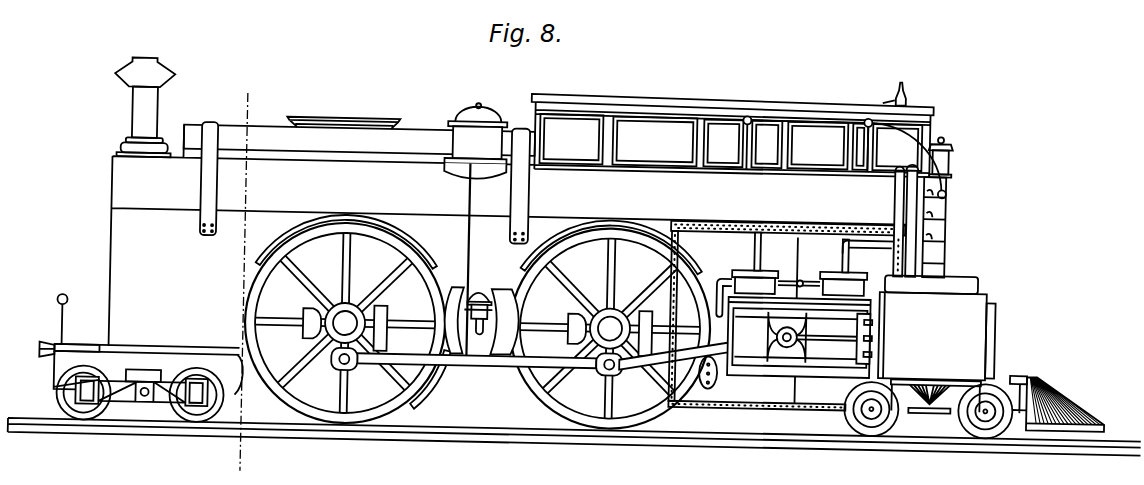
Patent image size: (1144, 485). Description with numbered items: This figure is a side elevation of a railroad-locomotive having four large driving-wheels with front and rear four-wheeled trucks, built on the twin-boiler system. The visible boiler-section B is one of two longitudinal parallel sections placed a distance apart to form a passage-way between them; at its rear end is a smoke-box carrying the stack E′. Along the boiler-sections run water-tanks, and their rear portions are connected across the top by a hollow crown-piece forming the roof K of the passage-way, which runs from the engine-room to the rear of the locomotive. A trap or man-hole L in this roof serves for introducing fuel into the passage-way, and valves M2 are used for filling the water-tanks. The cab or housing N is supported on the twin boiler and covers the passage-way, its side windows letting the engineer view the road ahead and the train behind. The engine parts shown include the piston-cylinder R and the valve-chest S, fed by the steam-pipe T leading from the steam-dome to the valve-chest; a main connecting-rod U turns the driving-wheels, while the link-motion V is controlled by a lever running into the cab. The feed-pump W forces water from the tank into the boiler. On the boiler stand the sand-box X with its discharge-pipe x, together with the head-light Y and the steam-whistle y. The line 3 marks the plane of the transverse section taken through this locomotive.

The stack E′ is at (148, 107).
The valves M2 is at (223, 168).
The section line 3 is at (250, 283).
The trap or man-hole L is at (344, 115).
The roof K is at (359, 141).
The boiler B is at (481, 265).
The sand-box X is at (476, 141).
The discharge-pipe x is at (479, 261).
The cab or housing N is at (739, 138).
The steam-whistle y is at (901, 91).
The steam-pipe T is at (897, 147).
The head-light Y is at (948, 157).
The feed-pump W is at (858, 268).
The valve-chest S is at (942, 282).
The piston-cylinder R is at (937, 336).
The main rod U is at (703, 352).
The link-motion V is at (720, 377).